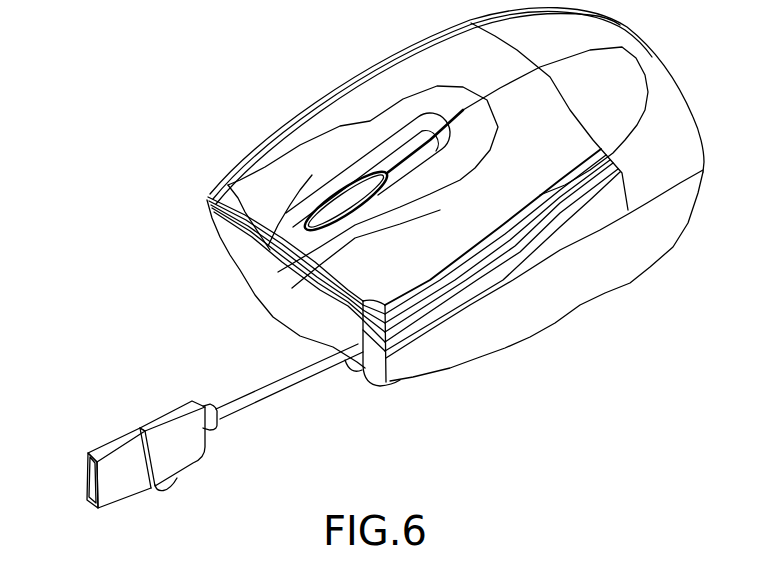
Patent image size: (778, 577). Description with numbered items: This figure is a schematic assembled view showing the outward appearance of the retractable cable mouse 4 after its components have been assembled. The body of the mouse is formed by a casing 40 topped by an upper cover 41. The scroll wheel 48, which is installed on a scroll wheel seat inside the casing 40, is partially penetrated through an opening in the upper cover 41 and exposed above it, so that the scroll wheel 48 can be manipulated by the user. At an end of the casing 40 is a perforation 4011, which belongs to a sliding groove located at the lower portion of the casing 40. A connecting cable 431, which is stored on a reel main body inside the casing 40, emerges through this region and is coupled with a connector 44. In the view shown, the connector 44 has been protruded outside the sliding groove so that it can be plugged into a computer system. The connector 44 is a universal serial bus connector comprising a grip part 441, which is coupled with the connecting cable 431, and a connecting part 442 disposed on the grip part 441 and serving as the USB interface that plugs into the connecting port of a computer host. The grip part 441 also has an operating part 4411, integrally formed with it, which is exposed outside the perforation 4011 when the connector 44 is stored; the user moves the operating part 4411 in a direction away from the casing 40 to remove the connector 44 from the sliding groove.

The retractable cable mouse 4 is at (252, 23).
The casing 40 is at (626, 256).
The upper cover 41 is at (592, 42).
The scroll wheel 48 is at (354, 192).
The perforation 4011 is at (357, 368).
The connecting cable 431 is at (275, 382).
The connector 44 is at (110, 372).
The grip part 441 is at (163, 422).
The connecting part 442 is at (127, 440).
The operating part 4411 is at (177, 487).